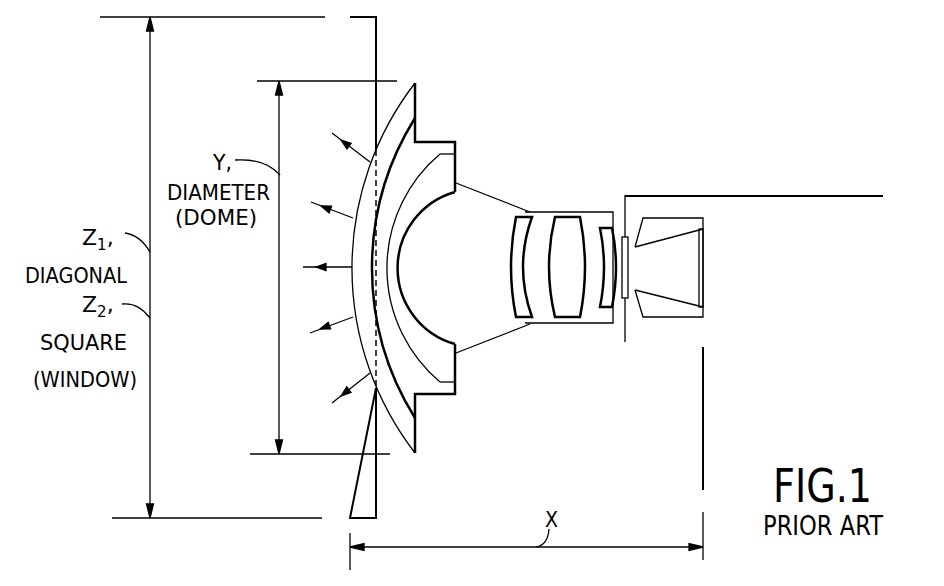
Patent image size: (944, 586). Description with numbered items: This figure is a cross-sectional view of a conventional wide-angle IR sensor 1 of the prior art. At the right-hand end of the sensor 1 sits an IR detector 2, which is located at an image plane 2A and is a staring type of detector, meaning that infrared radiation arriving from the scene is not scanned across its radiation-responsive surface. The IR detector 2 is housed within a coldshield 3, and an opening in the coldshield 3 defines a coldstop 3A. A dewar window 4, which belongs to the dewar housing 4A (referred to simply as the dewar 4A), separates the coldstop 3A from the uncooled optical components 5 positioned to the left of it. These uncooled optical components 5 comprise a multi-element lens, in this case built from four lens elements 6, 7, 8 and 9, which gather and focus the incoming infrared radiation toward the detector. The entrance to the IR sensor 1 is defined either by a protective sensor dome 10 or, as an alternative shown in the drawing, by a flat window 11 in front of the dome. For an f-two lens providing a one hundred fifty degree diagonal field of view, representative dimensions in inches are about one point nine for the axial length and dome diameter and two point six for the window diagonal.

The wide-angle IR sensor 1 is at (736, 156).
The IR detector 2 is at (705, 252).
The image plane 2A is at (705, 387).
The coldshield 3 is at (680, 218).
The coldstop 3A is at (633, 350).
The dewar window 4 is at (630, 197).
The dewar housing 4A is at (740, 196).
The uncooled optical components 5 is at (457, 352).
The lens element 6 is at (605, 228).
The lens element 7 is at (568, 217).
The lens element 8 is at (527, 215).
The lens element 9 is at (448, 180).
The sensor dome 10 is at (417, 92).
The window 11 is at (380, 60).